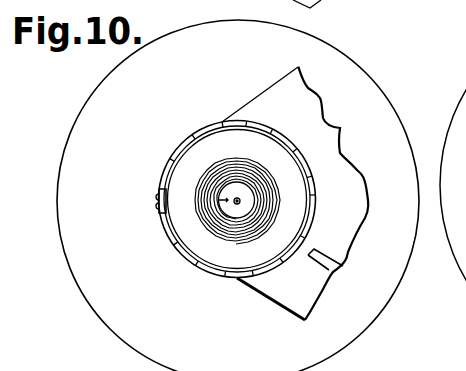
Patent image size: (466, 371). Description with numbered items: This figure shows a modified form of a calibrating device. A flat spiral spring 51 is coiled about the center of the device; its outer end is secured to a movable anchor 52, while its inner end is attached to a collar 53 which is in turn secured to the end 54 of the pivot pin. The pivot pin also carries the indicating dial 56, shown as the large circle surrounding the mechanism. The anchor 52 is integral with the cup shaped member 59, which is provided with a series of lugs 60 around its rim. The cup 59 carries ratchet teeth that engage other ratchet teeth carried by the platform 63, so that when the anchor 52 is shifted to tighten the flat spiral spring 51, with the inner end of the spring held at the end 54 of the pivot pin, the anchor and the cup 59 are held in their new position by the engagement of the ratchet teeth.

The flat spiral spring 51 is at (177, 168).
The movable anchor 52 is at (158, 210).
The collar 53 is at (230, 187).
The end of the pivot pin 54 is at (239, 202).
The indicating dial 56 is at (373, 306).
The cup shaped member 59 is at (222, 255).
The lugs 60 is at (316, 197).
The platform 63 is at (304, 113).